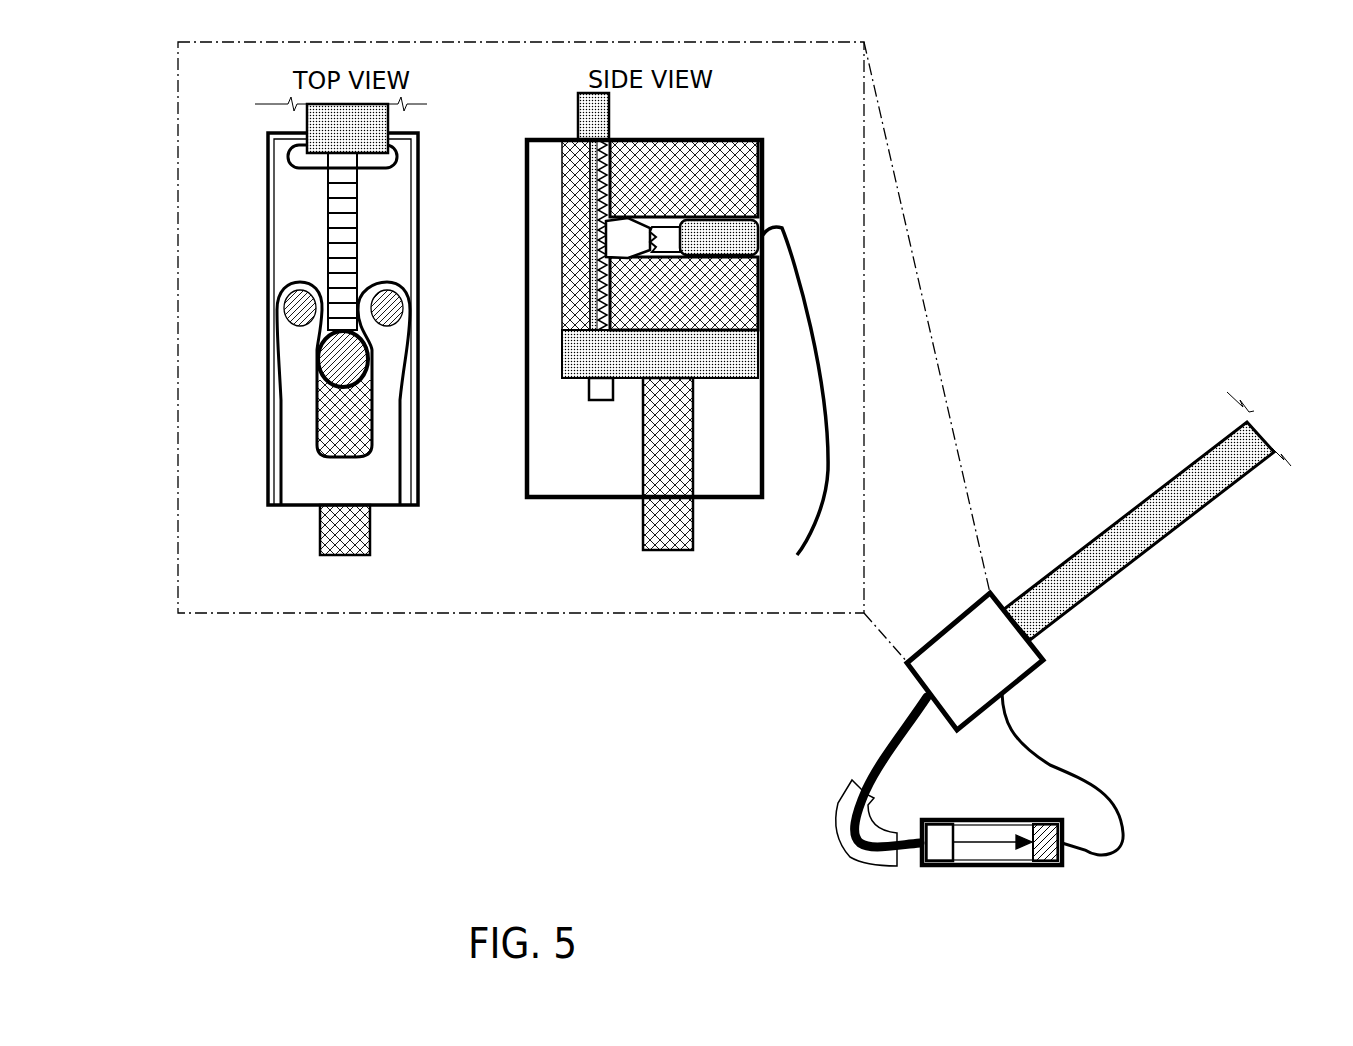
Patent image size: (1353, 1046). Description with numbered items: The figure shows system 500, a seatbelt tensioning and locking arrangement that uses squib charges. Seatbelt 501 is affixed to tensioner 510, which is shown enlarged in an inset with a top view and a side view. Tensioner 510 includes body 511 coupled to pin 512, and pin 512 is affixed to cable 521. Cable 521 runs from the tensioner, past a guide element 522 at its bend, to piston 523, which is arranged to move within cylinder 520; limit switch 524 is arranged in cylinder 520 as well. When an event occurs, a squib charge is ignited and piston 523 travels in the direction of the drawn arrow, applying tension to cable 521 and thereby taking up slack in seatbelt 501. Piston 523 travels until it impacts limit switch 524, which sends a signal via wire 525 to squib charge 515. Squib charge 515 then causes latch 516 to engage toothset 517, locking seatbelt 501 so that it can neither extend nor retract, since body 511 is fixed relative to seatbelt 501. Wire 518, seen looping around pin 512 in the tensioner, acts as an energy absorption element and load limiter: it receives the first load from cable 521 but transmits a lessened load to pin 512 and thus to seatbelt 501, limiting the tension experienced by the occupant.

The system 500 is at (1137, 441).
The seatbelt 501 is at (347, 133).
The tensioner 510 is at (975, 661).
The body 511 is at (684, 293).
The pin 512 is at (343, 358).
The squib charge 515 is at (727, 242).
The latch 516 is at (668, 230).
The toothset 517 is at (605, 233).
The wire 518 is at (283, 403).
The cylinder 520 is at (990, 866).
The cable 521 is at (320, 535).
The cable guide 522 is at (838, 832).
The piston 523 is at (937, 853).
The limit switch 524 is at (1042, 867).
The wire 525 is at (800, 548).